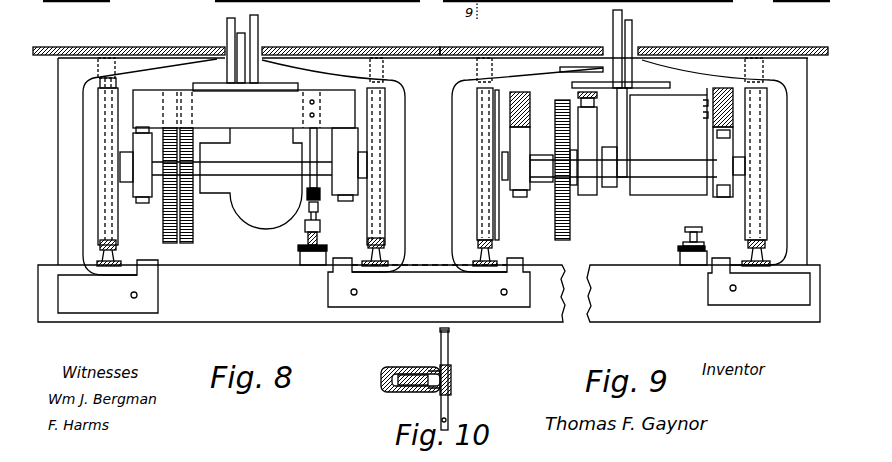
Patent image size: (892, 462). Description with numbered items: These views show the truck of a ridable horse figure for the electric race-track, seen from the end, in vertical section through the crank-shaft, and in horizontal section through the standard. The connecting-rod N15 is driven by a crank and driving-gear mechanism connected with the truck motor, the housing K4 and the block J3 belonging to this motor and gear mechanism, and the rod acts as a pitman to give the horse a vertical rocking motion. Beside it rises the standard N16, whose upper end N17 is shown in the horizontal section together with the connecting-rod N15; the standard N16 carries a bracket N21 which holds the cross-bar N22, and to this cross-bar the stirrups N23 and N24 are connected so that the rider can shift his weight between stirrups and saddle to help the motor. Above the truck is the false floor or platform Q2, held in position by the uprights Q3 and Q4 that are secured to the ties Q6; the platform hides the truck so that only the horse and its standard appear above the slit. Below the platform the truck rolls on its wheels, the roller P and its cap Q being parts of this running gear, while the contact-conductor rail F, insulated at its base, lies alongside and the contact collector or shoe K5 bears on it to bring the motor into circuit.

In FIG. 8, the roller cap Q is at (100, 78).
In FIG. 8, the roller P is at (103, 88).
In FIG. 8, the false floor or platform Q2 is at (113, 47).
In FIG. 9, the false floor or platform Q2 is at (482, 47).
In FIG. 8, the upright Q3 is at (108, 286).
In FIG. 8, the upright Q4 is at (294, 182).
In FIG. 8, the tie Q6 is at (66, 1).
In FIG. 9, the tie Q6 is at (735, 1).
In FIG. 8, the block J3 is at (244, 109).
In FIG. 8, the housing K4 is at (242, 178).
In FIG. 8, the contact collector or shoe K5 is at (313, 227).
In FIG. 8, the rail F is at (300, 240).
In FIG. 9, the rail F is at (686, 234).
In FIG. 8, the connecting-rod N15 is at (244, 50).
In FIG. 9, the connecting-rod N15 is at (627, 138).
In FIG. 10, the connecting-rod N15 is at (403, 374).
In FIG. 8, the standard N16 is at (227, 27).
In FIG. 10, the upper end of the standard N17 is at (382, 390).
In FIG. 10, the bracket N21 is at (451, 392).
In FIG. 10, the cross-bar N22 is at (448, 365).
In FIG. 10, the stirrup N23 is at (449, 332).
In FIG. 10, the stirrup N24 is at (448, 424).